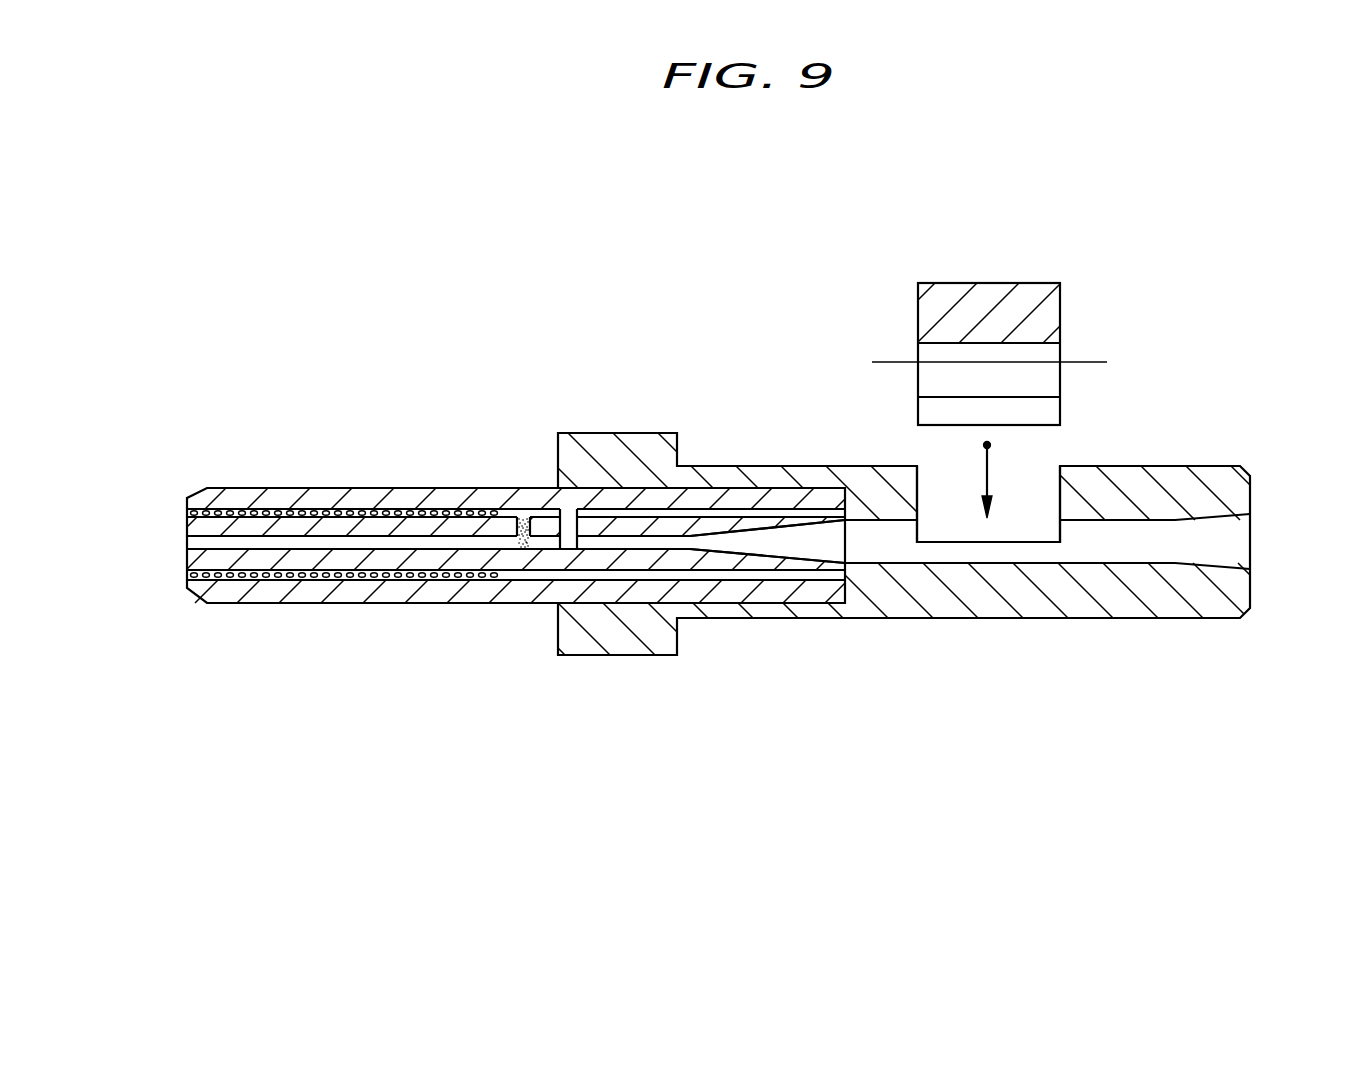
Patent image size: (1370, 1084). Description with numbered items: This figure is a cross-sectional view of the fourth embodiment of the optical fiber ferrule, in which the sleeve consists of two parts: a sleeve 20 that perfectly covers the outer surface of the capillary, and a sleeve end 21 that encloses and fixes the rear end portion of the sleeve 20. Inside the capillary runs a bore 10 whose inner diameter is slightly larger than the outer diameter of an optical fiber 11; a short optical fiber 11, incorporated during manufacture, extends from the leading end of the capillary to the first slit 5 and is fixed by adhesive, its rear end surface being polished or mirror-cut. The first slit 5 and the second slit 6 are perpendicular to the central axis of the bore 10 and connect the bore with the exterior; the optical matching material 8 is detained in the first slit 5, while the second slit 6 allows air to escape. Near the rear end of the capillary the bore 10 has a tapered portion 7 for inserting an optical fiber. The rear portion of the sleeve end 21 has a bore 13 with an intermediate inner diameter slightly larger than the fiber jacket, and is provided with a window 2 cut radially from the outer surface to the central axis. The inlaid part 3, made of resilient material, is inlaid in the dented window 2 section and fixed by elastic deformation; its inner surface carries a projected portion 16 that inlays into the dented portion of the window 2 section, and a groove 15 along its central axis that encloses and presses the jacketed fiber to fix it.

The window 2 is at (1042, 458).
The inlaid part 3 is at (1060, 283).
The first slit 5 is at (523, 512).
The second slit 6 is at (567, 515).
The tapered portion 7 is at (790, 563).
The optical matching material 8 is at (523, 549).
The bore 10 is at (347, 549).
The optical fiber 11 is at (233, 543).
The bore 13 is at (1087, 563).
The groove 15 is at (918, 345).
The projected portion 16 is at (1047, 417).
The sleeve 20 is at (278, 488).
The sleeve end 21 is at (975, 607).